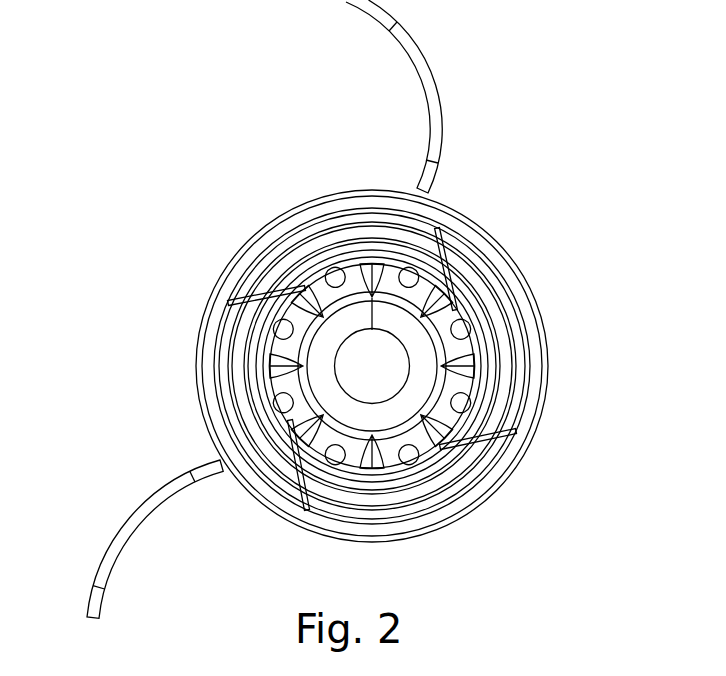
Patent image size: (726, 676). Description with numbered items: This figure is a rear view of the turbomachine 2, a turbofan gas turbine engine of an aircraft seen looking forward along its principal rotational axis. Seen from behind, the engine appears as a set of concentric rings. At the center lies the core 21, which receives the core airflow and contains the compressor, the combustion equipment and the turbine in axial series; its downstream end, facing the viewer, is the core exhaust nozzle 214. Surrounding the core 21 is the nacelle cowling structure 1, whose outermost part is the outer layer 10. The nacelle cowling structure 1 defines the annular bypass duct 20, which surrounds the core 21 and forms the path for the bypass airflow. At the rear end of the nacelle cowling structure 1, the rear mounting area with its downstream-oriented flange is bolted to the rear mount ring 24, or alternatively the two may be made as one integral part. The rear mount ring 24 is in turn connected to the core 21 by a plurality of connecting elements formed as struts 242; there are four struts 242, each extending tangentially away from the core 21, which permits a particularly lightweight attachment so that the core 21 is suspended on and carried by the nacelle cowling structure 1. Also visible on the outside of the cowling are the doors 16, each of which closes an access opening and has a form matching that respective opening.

The turbomachine 2 is at (553, 175).
The nacelle cowling structure 1 is at (466, 215).
The outer layer 10 is at (195, 372).
The bypass duct 20 is at (317, 250).
The core 21 is at (372, 238).
The core exhaust nozzle 214 is at (472, 352).
The rear mount ring 24 is at (230, 318).
The struts 242 is at (302, 463).
The door 16 is at (432, 60).